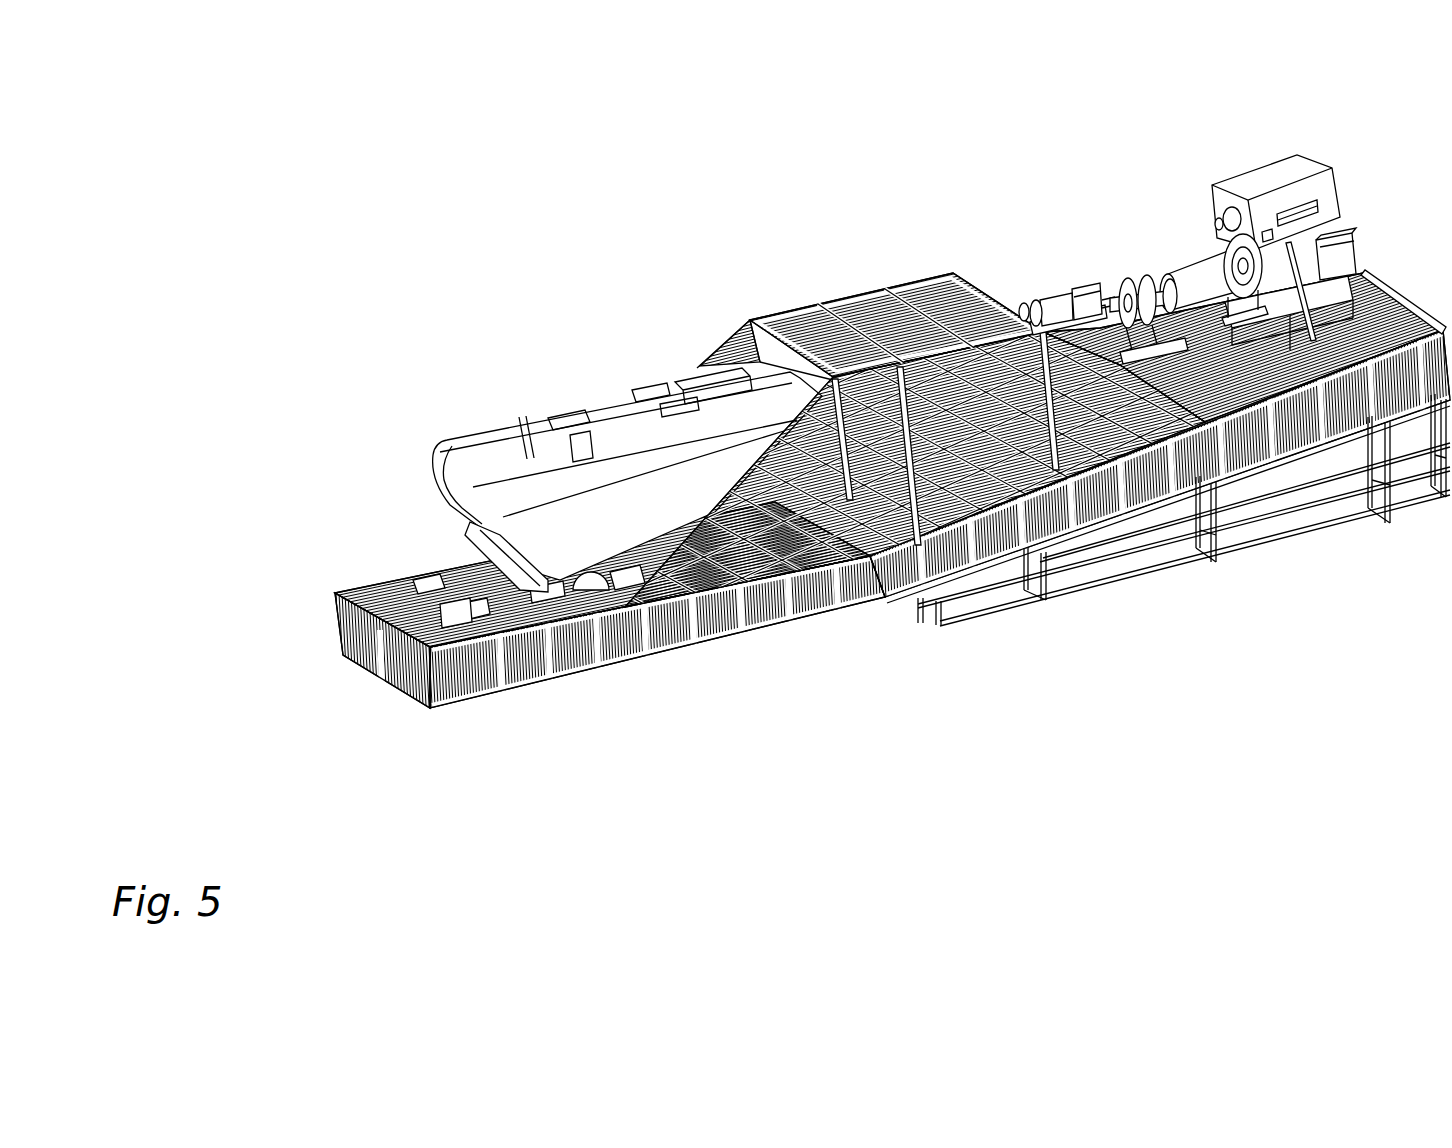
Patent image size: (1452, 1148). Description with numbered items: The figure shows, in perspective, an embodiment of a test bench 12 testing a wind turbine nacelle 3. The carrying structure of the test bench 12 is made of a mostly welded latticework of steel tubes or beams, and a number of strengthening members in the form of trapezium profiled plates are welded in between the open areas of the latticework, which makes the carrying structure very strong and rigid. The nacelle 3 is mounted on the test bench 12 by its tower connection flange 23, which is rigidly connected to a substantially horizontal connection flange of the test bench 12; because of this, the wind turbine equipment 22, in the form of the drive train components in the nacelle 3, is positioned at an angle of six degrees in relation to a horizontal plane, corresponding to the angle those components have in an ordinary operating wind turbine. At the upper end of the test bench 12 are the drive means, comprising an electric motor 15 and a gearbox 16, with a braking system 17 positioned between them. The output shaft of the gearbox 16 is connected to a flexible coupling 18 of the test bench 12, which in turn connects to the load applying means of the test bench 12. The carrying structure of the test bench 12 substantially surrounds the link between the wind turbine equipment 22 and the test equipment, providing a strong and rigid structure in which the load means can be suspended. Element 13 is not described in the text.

The test bench 12 is at (398, 234).
The wind turbine nacelle 3 is at (613, 453).
The wind turbine equipment 22 is at (497, 418).
The tower connection flange 23 is at (650, 600).
The flexible coupling 18 is at (1258, 447).
The winch drive unit 13 is at (1222, 250).
The electric motor 15 is at (1308, 263).
The gearbox 16 is at (1055, 310).
The braking system 17 is at (1142, 283).